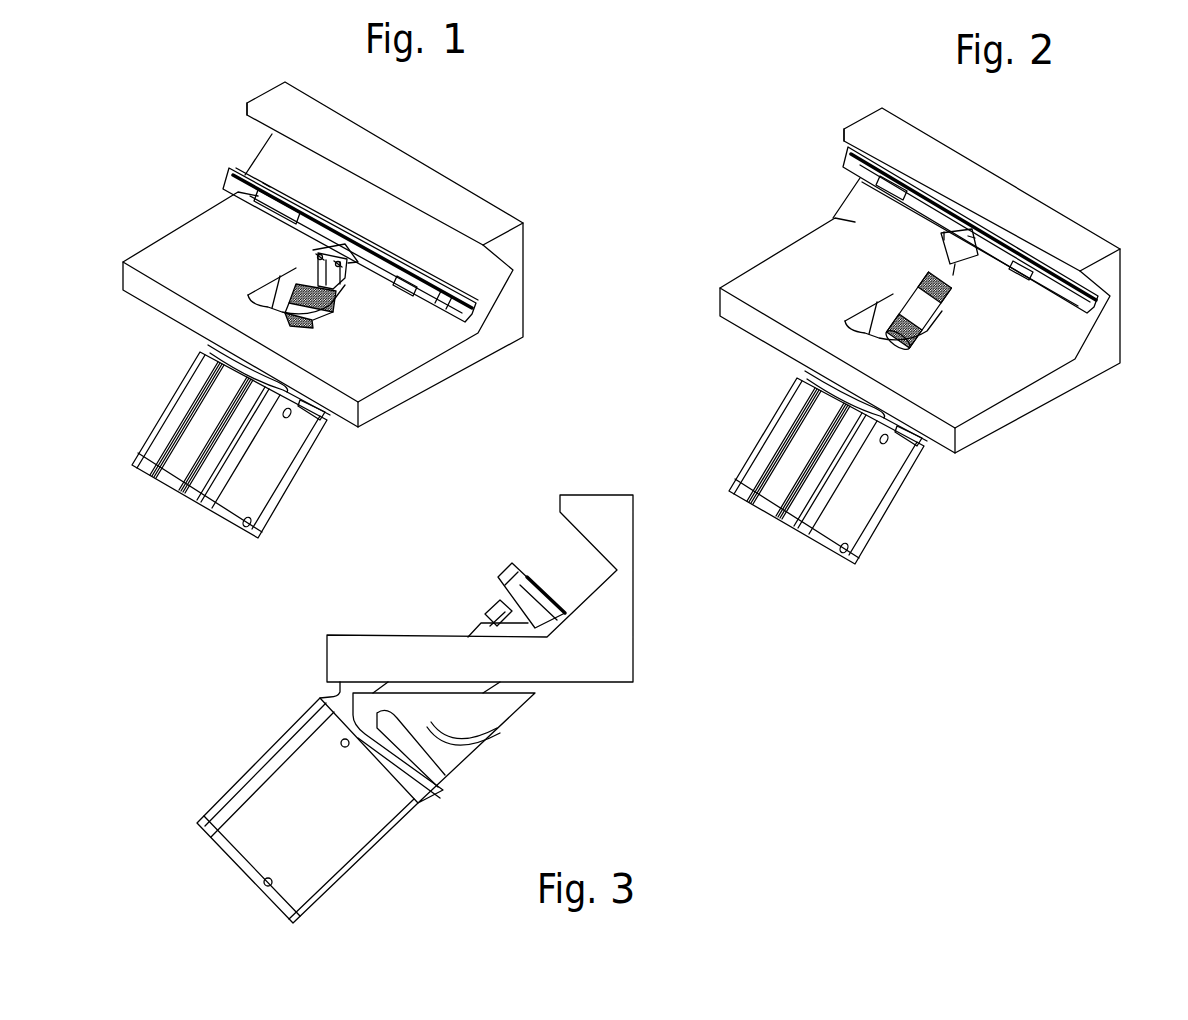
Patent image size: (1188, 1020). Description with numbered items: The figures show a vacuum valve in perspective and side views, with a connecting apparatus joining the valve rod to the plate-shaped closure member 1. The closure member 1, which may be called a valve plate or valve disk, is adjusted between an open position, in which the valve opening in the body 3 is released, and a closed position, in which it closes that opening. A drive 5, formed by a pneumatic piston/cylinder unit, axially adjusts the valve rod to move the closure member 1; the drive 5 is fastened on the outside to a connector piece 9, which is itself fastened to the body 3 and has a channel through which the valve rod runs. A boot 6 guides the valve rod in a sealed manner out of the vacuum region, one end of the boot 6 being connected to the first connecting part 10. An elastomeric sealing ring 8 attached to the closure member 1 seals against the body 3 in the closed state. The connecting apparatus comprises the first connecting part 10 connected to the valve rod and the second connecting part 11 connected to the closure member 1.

In FIG. 1, the closure member 1 is at (236, 179).
In FIG. 2, the closure member 1 is at (1052, 274).
In FIG. 3, the closure member 1 is at (526, 587).
In FIG. 1, the body 3 is at (473, 352).
In FIG. 2, the body 3 is at (1065, 383).
In FIG. 3, the body 3 is at (615, 642).
In FIG. 1, the drive 5 is at (306, 518).
In FIG. 2, the drive 5 is at (898, 533).
In FIG. 3, the drive 5 is at (358, 888).
In FIG. 1, the boot 6 is at (335, 308).
In FIG. 2, the boot 6 is at (918, 330).
In FIG. 1, the sealing ring 8 is at (234, 166).
In FIG. 3, the connector piece 9 is at (482, 718).
In FIG. 1, the first connecting part 10 is at (292, 301).
In FIG. 2, the first connecting part 10 is at (953, 272).
In FIG. 1, the second connecting part 11 is at (315, 258).
In FIG. 3, the second connecting part 11 is at (500, 610).